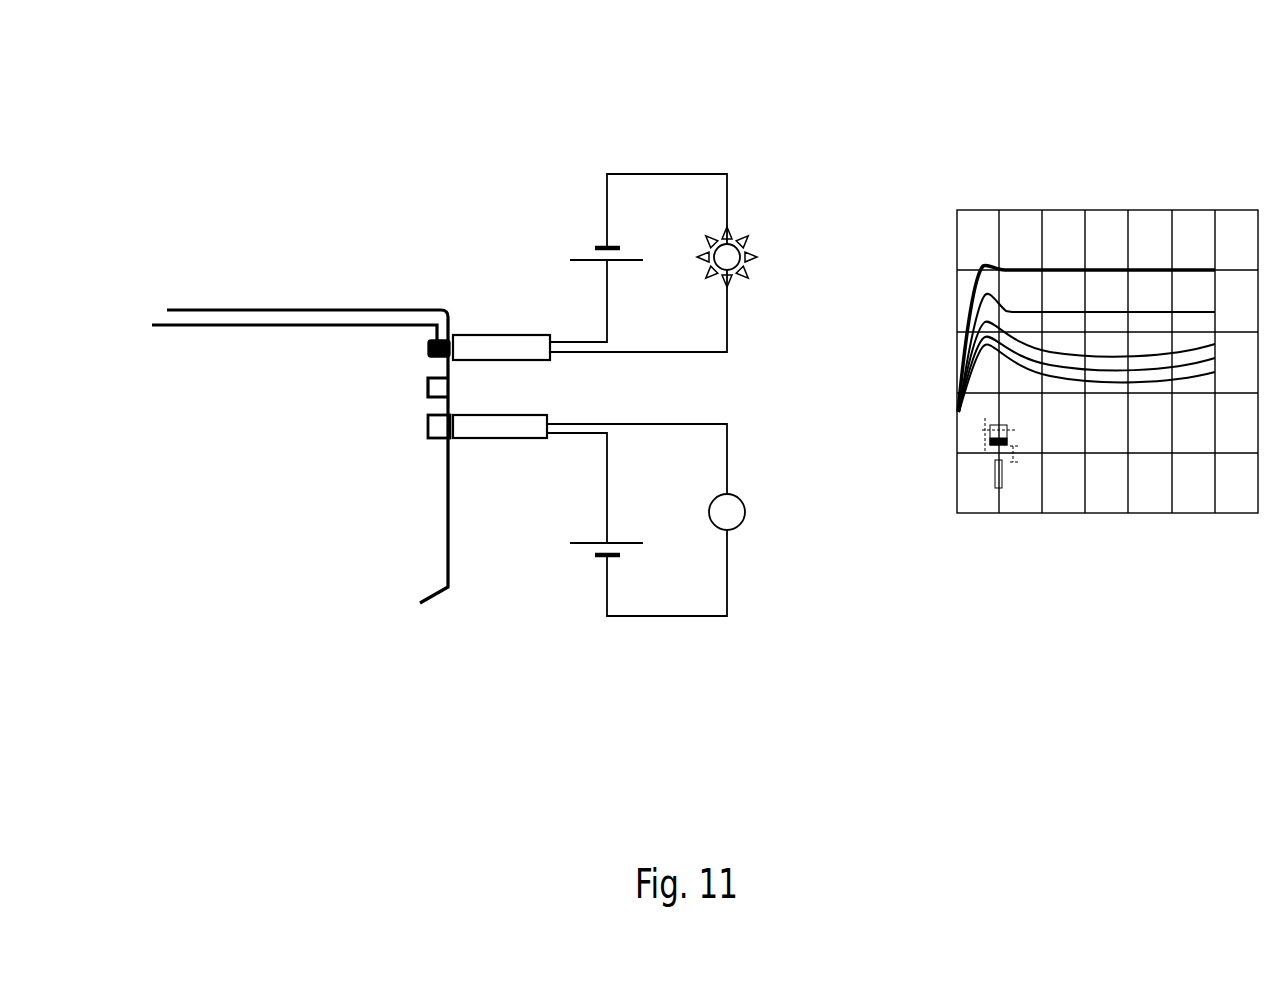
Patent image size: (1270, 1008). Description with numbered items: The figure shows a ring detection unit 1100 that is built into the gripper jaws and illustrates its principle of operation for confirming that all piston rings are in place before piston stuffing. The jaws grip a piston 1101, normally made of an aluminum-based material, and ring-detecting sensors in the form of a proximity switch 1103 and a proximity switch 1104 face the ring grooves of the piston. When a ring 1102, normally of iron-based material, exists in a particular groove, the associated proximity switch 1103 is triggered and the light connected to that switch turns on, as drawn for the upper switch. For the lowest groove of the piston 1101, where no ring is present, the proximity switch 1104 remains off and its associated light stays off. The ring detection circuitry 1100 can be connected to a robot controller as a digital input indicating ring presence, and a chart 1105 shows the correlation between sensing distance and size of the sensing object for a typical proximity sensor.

The ring detection unit 1100 is at (713, 727).
The piston 1101 is at (318, 420).
The ring 1102 is at (438, 338).
The proximity switch 1103 is at (487, 347).
The proximity switch 1104 is at (487, 420).
The chart 1105 is at (1222, 212).